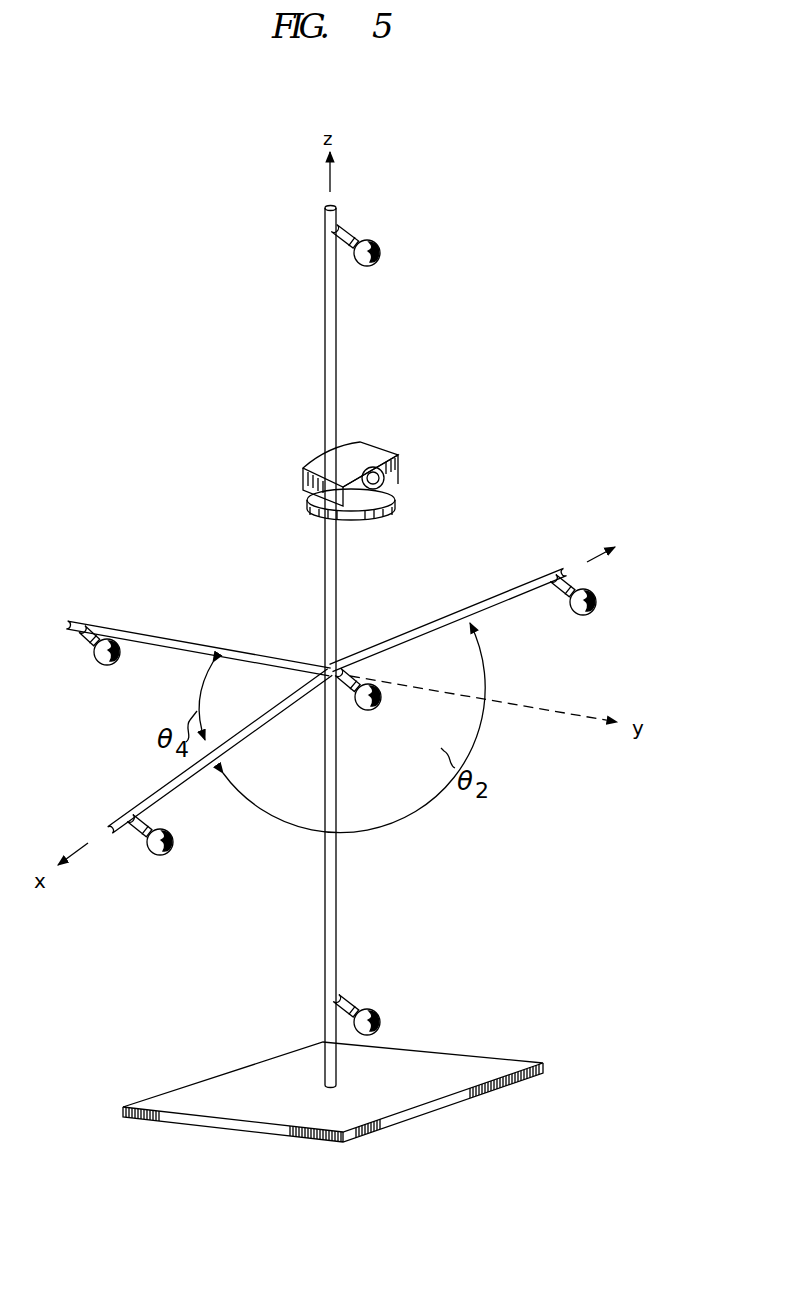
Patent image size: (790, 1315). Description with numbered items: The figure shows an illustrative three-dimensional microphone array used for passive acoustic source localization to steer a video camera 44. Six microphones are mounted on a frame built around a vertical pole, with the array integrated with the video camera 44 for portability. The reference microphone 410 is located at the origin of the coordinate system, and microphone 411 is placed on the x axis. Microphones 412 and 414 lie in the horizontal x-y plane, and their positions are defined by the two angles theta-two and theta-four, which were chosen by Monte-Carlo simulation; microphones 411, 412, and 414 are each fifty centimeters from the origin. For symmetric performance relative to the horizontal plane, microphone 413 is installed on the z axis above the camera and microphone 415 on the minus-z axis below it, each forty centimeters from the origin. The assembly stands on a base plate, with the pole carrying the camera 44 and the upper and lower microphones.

The video camera 44 is at (387, 446).
The microphone 410 is at (367, 712).
The microphone 411 is at (158, 858).
The microphone 412 is at (586, 618).
The microphone 413 is at (364, 269).
The microphone 414 is at (104, 668).
The microphone 415 is at (368, 1038).